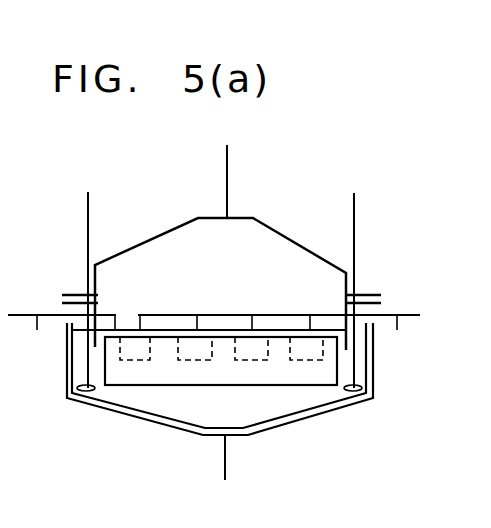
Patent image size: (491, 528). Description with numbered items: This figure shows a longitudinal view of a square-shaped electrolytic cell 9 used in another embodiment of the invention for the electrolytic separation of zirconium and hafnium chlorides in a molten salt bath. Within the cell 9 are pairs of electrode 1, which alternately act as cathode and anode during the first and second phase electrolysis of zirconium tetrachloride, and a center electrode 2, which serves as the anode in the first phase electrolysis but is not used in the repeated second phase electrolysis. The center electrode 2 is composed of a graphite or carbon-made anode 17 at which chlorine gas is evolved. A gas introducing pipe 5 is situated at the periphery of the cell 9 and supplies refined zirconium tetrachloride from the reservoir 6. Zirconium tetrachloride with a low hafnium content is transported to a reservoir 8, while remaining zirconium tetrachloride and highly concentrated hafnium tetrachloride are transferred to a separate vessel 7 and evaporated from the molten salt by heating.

The electrode 1 is at (37, 318).
The center electrode 2 is at (393, 322).
The gas introducing pipe 5 is at (70, 310).
The reservoir for refined zirconium tetrachloride 6 is at (217, 290).
The separate vessel 7 is at (225, 480).
The reservoir 8 is at (227, 145).
The cell 9 is at (373, 385).
The anode 17 is at (83, 405).